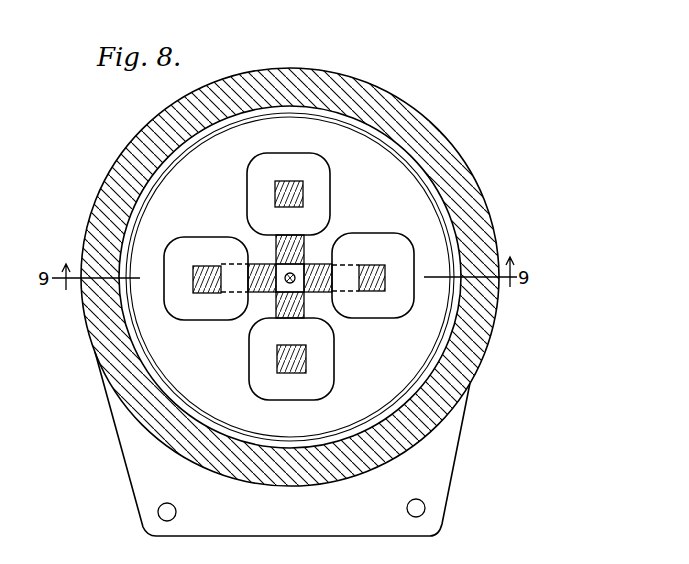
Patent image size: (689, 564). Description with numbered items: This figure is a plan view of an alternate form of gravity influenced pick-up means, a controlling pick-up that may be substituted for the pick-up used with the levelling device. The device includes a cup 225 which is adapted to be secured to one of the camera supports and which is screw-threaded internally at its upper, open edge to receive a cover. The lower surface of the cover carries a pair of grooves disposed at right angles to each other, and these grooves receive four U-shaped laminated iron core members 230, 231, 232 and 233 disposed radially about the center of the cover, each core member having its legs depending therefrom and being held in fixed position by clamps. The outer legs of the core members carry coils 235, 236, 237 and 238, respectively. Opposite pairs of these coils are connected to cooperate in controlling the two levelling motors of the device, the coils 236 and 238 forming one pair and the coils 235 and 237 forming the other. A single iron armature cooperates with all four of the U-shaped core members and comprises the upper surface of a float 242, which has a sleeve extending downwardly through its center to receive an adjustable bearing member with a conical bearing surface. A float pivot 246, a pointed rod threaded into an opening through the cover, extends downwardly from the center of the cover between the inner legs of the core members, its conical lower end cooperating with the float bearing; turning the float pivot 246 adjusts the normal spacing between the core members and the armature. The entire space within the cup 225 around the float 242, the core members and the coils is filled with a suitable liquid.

The cup 225 is at (470, 343).
The U-shaped laminated iron core member 230 is at (203, 265).
The U-shaped laminated iron core member 231 is at (302, 193).
The U-shaped laminated iron core member 232 is at (373, 278).
The U-shaped laminated iron core member 233 is at (286, 358).
The coil 235 is at (180, 258).
The coil 236 is at (312, 170).
The coil 237 is at (393, 250).
The coil 238 is at (262, 341).
The float 242 is at (392, 377).
The float pivot 246 is at (292, 277).